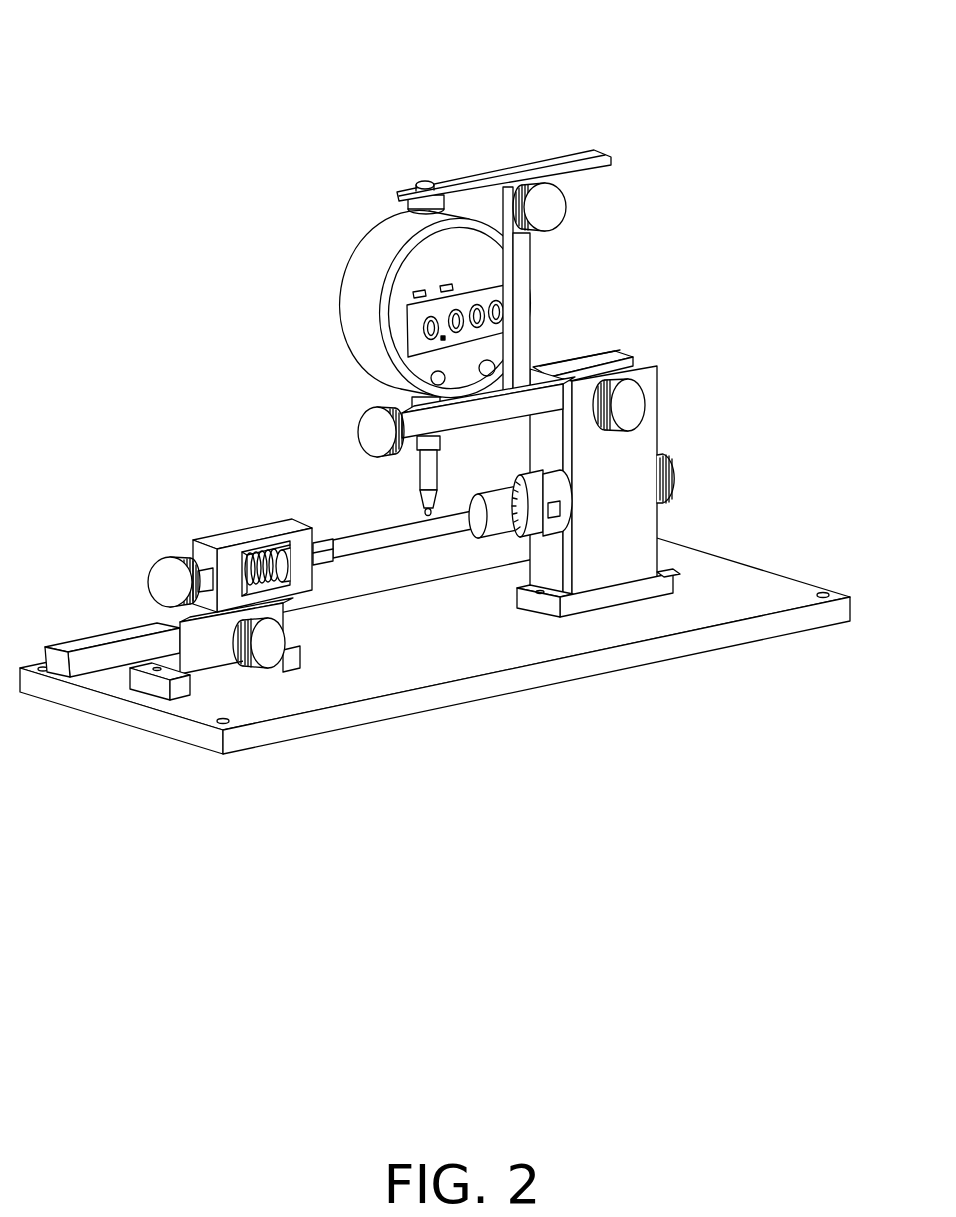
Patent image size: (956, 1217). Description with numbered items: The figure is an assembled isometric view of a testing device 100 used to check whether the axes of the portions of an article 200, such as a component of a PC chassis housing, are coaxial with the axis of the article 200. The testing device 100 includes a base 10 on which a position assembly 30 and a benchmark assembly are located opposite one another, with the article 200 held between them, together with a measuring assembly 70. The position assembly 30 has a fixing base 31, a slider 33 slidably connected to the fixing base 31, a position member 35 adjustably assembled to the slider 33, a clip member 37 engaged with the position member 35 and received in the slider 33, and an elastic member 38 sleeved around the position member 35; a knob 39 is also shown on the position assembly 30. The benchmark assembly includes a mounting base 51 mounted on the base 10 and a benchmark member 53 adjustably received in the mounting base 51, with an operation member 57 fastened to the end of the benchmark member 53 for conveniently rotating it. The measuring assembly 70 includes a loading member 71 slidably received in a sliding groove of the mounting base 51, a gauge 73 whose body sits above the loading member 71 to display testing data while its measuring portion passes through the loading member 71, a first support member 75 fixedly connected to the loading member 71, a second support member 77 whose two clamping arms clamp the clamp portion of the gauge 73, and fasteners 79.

The testing device 100 is at (457, 26).
The base 10 is at (768, 593).
The position assembly 30 is at (178, 553).
The fixing base 31 is at (205, 650).
The slider 33 is at (220, 540).
The position member 35 is at (177, 544).
The clip member 37 is at (282, 560).
The elastic member 38 is at (253, 560).
The locking knob 39 is at (163, 577).
The article 200 is at (385, 537).
The mounting base 51 is at (643, 530).
The benchmark member 53 is at (552, 487).
The operation member 57 is at (680, 472).
The measuring assembly 70 is at (542, 333).
The loading member 71 is at (550, 402).
The gauge 73 is at (530, 283).
The first support member 75 is at (525, 240).
The second support member 77 is at (580, 172).
The fasteners 79 is at (566, 216).